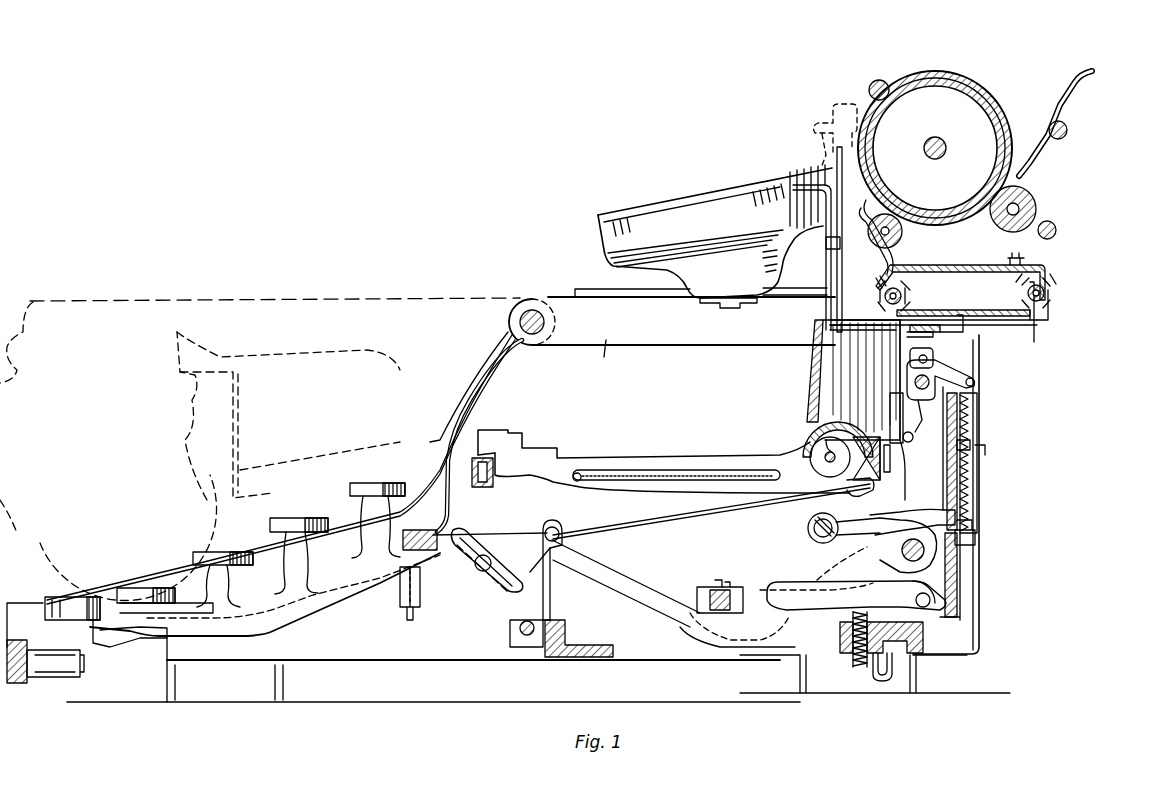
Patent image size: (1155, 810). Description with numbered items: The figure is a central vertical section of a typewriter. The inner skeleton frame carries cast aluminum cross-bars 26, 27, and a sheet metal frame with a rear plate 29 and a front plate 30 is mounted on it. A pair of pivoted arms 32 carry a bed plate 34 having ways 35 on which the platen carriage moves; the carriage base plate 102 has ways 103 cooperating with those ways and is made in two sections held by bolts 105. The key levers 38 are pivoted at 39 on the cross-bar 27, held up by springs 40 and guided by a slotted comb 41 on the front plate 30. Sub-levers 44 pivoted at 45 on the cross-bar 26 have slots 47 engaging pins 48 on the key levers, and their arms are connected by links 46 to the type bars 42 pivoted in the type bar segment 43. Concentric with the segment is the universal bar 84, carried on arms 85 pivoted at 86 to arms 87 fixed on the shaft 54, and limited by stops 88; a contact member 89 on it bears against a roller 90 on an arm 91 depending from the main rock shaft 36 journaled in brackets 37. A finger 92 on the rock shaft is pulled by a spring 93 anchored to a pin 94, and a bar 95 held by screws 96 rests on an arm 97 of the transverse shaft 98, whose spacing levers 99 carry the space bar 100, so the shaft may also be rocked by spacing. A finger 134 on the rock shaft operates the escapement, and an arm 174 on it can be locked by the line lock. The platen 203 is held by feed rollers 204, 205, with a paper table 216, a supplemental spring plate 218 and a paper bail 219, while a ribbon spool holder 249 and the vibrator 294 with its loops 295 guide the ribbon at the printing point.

The cross-bar 26 is at (585, 657).
The cross-bar 27 is at (893, 660).
The rear plate 29 is at (960, 555).
The front plate 30 is at (450, 500).
The arms 32 is at (385, 297).
The bed plate 34 is at (972, 312).
The ways 35 is at (912, 288).
The main operating rock shaft 36 is at (905, 378).
The brackets 37 is at (932, 420).
The key levers 38 is at (338, 585).
The pivot 39 is at (927, 613).
The springs 40 is at (845, 625).
The slotted comb 41 is at (420, 614).
The type bars 42 is at (650, 468).
The type bar segment 43 is at (890, 470).
The sub-levers 44 is at (545, 585).
The pivot 45 is at (565, 535).
The link 46 is at (708, 520).
The slots 47 is at (500, 560).
The pins 48 is at (478, 570).
The shaft 54 is at (980, 530).
The universal bar 84 is at (905, 408).
The arms 85 is at (980, 490).
The pivots 86 is at (808, 530).
The arms 87 is at (850, 553).
The stops 88 is at (868, 495).
The contact member 89 is at (803, 444).
The roller 90 is at (913, 440).
The arm 91 is at (838, 405).
The finger 92 is at (985, 385).
The spring 93 is at (985, 400).
The pin 94 is at (985, 440).
The bar 95 is at (990, 450).
The screws 96 is at (980, 410).
The arm 97 is at (958, 515).
The shaft 98 is at (728, 590).
The spacing levers 99 is at (690, 600).
The space bar 100 is at (63, 596).
The base plate 102 is at (940, 270).
The ways 103 is at (880, 280).
The bolts 105 is at (1025, 256).
The finger 134 is at (1050, 322).
The arm 174 is at (880, 352).
The platen 203 is at (962, 87).
The roller 204 is at (900, 239).
The roller 205 is at (1036, 205).
The paper table 216 is at (1056, 106).
The supplemental spring plate 218 is at (890, 258).
The paper bail 219 is at (874, 80).
The ribbon spool holder 249 is at (602, 252).
The vibrator 294 is at (826, 256).
The loops 295 is at (815, 164).